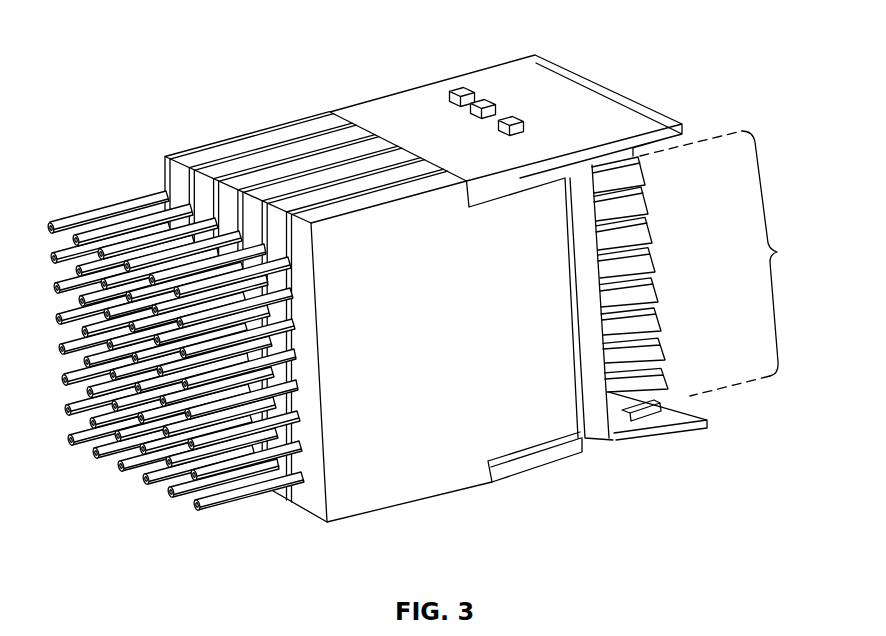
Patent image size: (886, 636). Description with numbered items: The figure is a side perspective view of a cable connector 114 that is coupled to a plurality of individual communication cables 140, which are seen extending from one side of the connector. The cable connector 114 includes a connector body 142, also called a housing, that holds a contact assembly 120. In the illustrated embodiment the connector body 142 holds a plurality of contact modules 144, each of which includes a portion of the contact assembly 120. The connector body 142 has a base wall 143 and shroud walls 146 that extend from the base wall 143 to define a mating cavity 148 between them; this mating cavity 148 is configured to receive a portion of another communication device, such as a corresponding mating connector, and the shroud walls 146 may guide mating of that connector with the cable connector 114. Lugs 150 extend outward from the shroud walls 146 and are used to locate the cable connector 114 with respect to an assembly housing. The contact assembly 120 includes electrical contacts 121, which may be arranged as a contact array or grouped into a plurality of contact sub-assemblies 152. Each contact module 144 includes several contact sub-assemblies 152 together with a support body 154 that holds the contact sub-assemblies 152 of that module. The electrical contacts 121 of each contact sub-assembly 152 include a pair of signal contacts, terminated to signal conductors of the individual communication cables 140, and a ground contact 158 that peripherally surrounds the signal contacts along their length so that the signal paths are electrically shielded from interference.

The cable connector 114 is at (238, 46).
The contact assembly 120 is at (735, 263).
The electrical contacts 121 is at (656, 184).
The individual communication cables 140 is at (143, 207).
The connector body 142 is at (365, 113).
The base wall 143 is at (593, 340).
The contact modules 144 is at (398, 465).
The shroud walls 146 is at (562, 76).
The mating cavity 148 is at (695, 202).
The lugs 150 is at (493, 97).
The contact sub-assemblies 152 is at (633, 395).
The support body 154 is at (538, 418).
The ground contact 158 is at (652, 357).